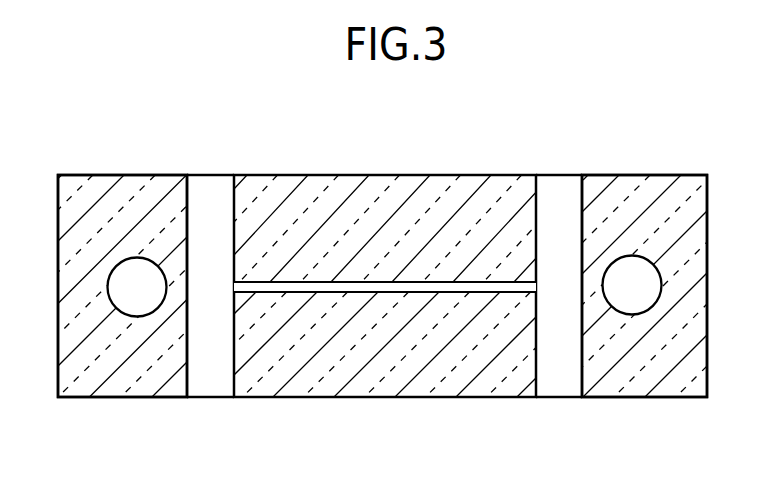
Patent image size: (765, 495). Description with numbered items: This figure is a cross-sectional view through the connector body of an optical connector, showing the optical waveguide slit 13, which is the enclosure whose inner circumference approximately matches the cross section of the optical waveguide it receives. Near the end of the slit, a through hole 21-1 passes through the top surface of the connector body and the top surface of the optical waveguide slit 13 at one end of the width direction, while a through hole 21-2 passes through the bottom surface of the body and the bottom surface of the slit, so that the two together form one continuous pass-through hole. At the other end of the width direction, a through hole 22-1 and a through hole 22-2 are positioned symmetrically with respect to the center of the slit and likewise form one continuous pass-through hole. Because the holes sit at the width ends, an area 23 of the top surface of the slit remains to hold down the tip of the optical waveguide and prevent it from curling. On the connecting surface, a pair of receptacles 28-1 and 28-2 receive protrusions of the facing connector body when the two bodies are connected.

The optical waveguide slit 13 is at (322, 283).
The area of the top surface of the optical waveguide slit 23 is at (422, 285).
The through hole 21-1 is at (583, 197).
The through hole 21-2 is at (582, 372).
The through hole 22-1 is at (192, 178).
The through hole 22-2 is at (188, 372).
The receptacle 28-1 is at (652, 283).
The receptacle 28-2 is at (108, 283).